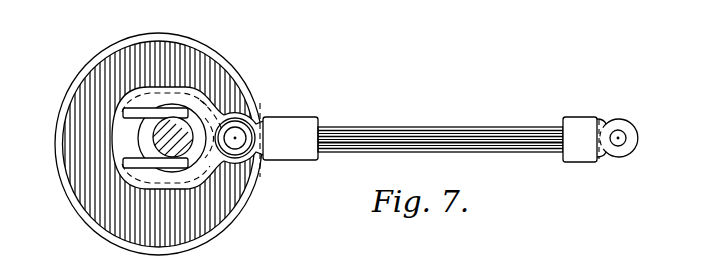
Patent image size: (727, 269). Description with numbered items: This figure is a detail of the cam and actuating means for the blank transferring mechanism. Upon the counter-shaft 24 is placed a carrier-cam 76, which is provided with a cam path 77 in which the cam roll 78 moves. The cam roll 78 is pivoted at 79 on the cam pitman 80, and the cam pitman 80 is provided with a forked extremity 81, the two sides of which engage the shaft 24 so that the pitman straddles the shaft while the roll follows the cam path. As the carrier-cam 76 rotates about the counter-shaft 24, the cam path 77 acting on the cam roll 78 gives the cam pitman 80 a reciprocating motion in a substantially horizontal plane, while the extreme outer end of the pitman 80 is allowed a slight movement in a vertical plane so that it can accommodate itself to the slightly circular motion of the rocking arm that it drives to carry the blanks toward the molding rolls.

The counter-shaft 24 is at (181, 132).
The carrier-cam 76 is at (93, 50).
The cam path 77 is at (133, 218).
The cam roll 78 is at (243, 112).
The pivot 79 is at (237, 144).
The cam pitman 80 is at (392, 126).
The forked extremity 81 is at (196, 92).